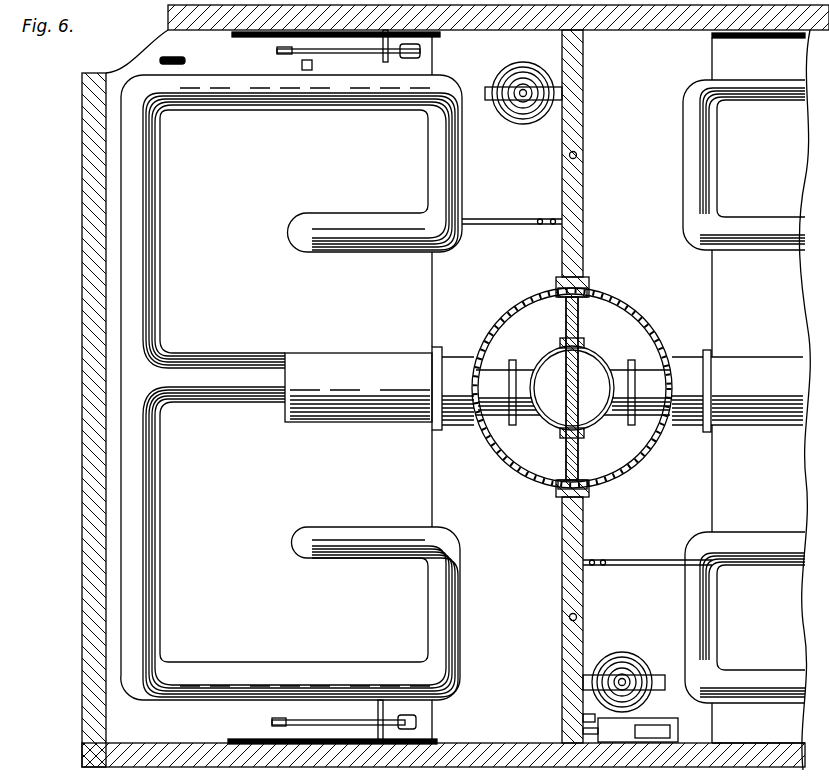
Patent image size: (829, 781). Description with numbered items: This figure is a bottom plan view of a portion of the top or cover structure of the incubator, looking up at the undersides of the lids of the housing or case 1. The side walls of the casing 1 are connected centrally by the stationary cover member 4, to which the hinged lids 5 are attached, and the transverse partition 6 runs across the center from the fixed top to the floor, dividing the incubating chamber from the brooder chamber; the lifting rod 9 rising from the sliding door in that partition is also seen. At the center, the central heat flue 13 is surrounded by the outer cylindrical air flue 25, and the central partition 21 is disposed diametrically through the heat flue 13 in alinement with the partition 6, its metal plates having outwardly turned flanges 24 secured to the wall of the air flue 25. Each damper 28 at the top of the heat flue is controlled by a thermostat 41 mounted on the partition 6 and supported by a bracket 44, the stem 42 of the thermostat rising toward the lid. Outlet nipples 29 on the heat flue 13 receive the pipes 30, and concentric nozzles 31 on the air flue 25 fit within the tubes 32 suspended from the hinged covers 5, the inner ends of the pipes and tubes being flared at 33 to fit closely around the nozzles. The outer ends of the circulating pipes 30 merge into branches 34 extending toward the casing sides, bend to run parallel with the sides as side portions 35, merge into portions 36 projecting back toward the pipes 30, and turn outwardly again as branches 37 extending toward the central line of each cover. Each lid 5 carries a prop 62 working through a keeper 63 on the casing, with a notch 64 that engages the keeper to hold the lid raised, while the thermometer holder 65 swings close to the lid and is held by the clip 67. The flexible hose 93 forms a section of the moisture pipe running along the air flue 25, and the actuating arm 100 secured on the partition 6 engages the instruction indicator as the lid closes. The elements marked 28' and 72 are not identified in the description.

The housing or case 1 is at (82, 465).
The stationary or permanent cover member 4 is at (560, 388).
The hinged lid 5 is at (520, 390).
The transverse partition 6 is at (584, 175).
The lifting rod 9 is at (578, 154).
The central heat flue 13 is at (592, 354).
The central partition 21 is at (566, 440).
The flanges 24 is at (560, 290).
The outer cylindrical body or air flue 25 is at (641, 460).
The damper 28 is at (647, 542).
The upper bar 28' is at (512, 239).
The outlet nipples or nozzles 29 is at (622, 372).
The pipes or circulating pipes 30 is at (509, 382).
The nozzles 31 is at (462, 357).
The tubes 32 is at (390, 406).
The flared inner ends 33 is at (434, 352).
The branches 34 is at (150, 270).
The side portions or branches 35 is at (297, 109).
The portions 36 is at (446, 150).
The branches 37 is at (370, 226).
The thermostat 41 is at (514, 116).
The stem 42 is at (523, 89).
The bracket 44 is at (548, 93).
The prop 62 is at (331, 54).
The keeper 63 is at (385, 62).
The notch 64 is at (282, 56).
The casing or holder 65 is at (184, 60).
The holding bracket or clip 67 is at (304, 70).
The bar 72 is at (235, 38).
The flexible hose 93 is at (670, 730).
The actuating arm 100 is at (582, 718).